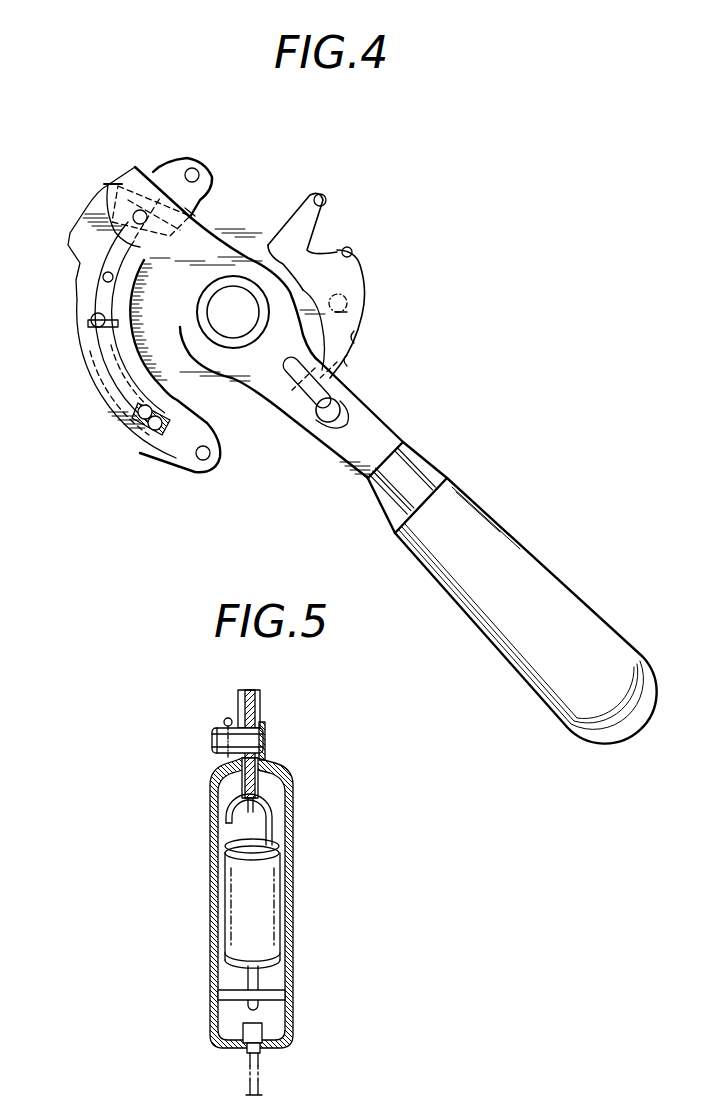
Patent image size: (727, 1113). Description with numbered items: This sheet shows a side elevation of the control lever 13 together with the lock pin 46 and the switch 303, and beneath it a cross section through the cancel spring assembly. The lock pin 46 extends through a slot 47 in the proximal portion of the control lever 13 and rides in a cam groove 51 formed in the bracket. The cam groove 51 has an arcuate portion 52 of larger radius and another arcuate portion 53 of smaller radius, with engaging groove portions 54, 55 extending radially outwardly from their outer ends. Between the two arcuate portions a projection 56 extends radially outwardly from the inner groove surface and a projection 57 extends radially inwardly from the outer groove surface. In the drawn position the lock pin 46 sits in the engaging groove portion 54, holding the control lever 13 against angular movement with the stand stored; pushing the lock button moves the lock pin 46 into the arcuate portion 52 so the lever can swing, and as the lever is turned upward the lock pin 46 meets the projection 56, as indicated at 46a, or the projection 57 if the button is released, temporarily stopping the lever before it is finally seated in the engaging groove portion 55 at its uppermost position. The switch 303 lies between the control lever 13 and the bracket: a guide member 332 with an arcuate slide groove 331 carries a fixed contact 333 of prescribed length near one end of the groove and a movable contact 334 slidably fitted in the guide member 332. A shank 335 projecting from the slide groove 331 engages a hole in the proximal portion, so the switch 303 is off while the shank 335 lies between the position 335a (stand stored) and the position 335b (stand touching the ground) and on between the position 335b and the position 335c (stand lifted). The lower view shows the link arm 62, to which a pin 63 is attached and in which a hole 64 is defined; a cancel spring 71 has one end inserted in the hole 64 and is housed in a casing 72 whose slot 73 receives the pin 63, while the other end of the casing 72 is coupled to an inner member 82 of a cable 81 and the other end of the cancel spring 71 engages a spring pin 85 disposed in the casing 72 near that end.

In FIG. 4, the control lever 13 is at (628, 612).
In FIG. 4, the lock pin 46 is at (333, 421).
In FIG. 4, the lock pin engaging position 46a is at (350, 310).
In FIG. 4, the slot 47 is at (287, 378).
In FIG. 4, the cam groove 51 is at (358, 340).
In FIG. 4, the arcuate portion 52 is at (347, 366).
In FIG. 4, the arcuate portion 53 is at (280, 237).
In FIG. 4, the engaging groove portion 54 is at (348, 425).
In FIG. 4, the engaging groove portion 55 is at (328, 198).
In FIG. 4, the projection 56 is at (345, 298).
In FIG. 4, the projection 57 is at (350, 249).
In FIG. 4, the switch 303 is at (188, 462).
In FIG. 4, the arcuate slide groove 331 is at (157, 322).
In FIG. 4, the guide member 332 is at (173, 455).
In FIG. 4, the fixed contact 333 is at (118, 390).
In FIG. 4, the movable contact 334 is at (116, 186).
In FIG. 4, the shank 335 is at (152, 172).
In FIG. 4, the shank position 335a is at (228, 213).
In FIG. 4, the shank position 335b is at (95, 315).
In FIG. 4, the shank position 335c is at (147, 432).
In FIG. 5, the link arm 62 is at (251, 690).
In FIG. 5, the pin 63 is at (266, 746).
In FIG. 5, the hole 64 is at (270, 805).
In FIG. 5, the cancel spring 71 is at (281, 848).
In FIG. 5, the casing 72 is at (292, 900).
In FIG. 5, the slot 73 is at (227, 718).
In FIG. 5, the cable 81 is at (278, 1086).
In FIG. 5, the inner member 82 is at (264, 1050).
In FIG. 5, the spring pin 85 is at (282, 990).